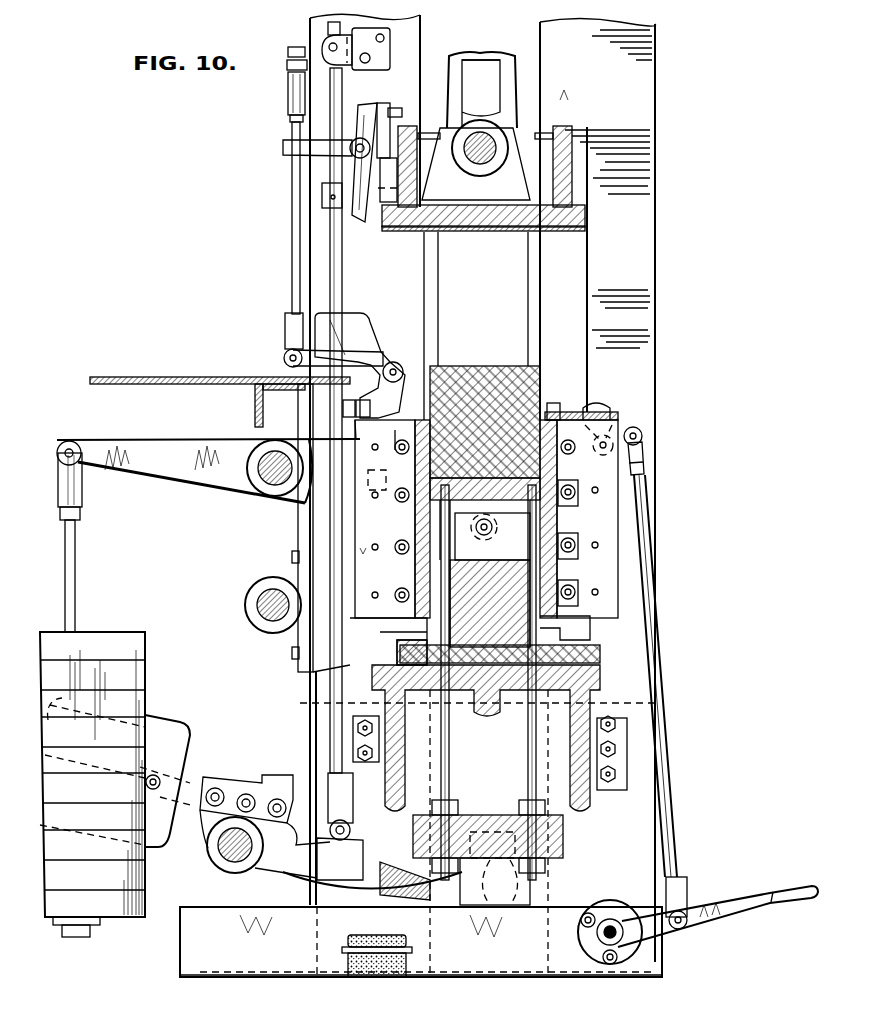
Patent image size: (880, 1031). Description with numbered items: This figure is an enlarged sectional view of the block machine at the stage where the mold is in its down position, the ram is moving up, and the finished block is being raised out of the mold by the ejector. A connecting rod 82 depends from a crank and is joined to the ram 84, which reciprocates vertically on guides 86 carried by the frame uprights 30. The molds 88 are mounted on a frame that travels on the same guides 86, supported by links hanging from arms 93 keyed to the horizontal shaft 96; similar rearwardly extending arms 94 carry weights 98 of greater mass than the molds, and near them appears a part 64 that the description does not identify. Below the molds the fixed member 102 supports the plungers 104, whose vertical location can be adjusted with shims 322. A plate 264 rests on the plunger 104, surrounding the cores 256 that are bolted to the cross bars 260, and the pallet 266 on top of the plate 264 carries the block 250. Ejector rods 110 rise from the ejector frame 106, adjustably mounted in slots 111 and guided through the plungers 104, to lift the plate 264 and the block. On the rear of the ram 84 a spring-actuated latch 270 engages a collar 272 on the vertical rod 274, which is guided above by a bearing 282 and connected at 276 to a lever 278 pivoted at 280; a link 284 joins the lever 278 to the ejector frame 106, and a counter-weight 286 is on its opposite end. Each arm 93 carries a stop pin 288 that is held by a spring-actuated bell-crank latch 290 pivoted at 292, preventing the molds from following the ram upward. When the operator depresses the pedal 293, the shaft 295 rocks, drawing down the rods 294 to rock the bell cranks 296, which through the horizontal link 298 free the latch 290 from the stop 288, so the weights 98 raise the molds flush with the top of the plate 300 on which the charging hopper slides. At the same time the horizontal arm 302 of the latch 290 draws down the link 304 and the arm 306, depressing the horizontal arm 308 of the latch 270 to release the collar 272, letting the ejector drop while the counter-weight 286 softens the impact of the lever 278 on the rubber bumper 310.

The frame upright 30 is at (412, 37).
The connecting rod 82 is at (488, 70).
The ram 84 is at (566, 196).
The guide 86 is at (530, 268).
The mold 88 is at (562, 513).
The arm 93 is at (330, 488).
The arm 94 is at (178, 470).
The horizontal shaft 96 is at (269, 473).
The weight 98 is at (137, 647).
The fixed member 102 is at (518, 682).
The plunger 104 is at (577, 637).
The ejector frame 106 is at (562, 848).
The ejector rod 110 is at (530, 732).
The slot 111 is at (433, 838).
The block 250 is at (493, 380).
The core 256 is at (470, 545).
The cross bar 260 is at (410, 630).
The plate 264 is at (644, 466).
The platen or pallet 266 is at (566, 414).
The spring-actuated latch 270 is at (358, 220).
The collar 272 is at (322, 192).
The vertical rod 274 is at (340, 286).
The connection 276 is at (350, 833).
The lever 278 is at (292, 897).
The pivot 280 is at (226, 850).
The bearing 282 is at (325, 45).
The link 284 is at (477, 880).
The counter-weight 286 is at (168, 752).
The stop pin 288 is at (420, 530).
The bell-crank latch 290 is at (396, 400).
The pivot 292 is at (396, 360).
The pedal 293 is at (769, 897).
The rod 294 is at (668, 748).
The shaft 295 is at (606, 940).
The bell crank 296 is at (641, 430).
The horizontal link 298 is at (555, 404).
The plate 300 is at (143, 367).
The horizontal arm 302 is at (286, 372).
The link 304 is at (292, 172).
The arm 306 is at (288, 78).
The horizontal arm 308 is at (350, 149).
The rubber bumper 310 is at (364, 955).
The shim 322 is at (578, 655).
The roller 64 is at (279, 616).